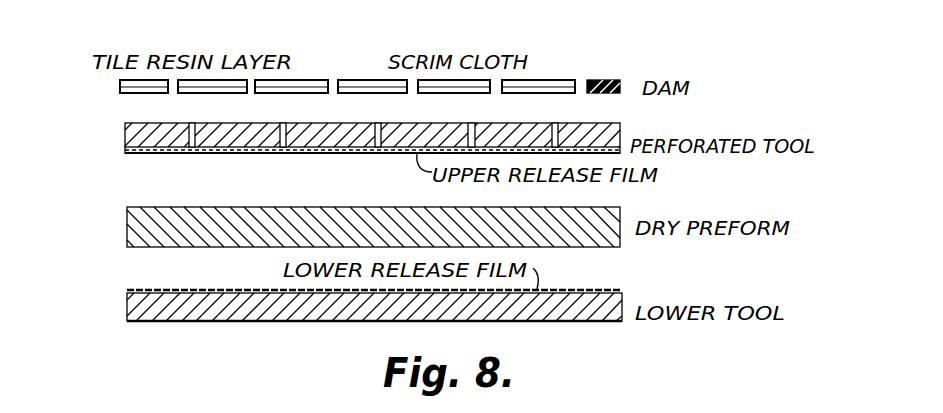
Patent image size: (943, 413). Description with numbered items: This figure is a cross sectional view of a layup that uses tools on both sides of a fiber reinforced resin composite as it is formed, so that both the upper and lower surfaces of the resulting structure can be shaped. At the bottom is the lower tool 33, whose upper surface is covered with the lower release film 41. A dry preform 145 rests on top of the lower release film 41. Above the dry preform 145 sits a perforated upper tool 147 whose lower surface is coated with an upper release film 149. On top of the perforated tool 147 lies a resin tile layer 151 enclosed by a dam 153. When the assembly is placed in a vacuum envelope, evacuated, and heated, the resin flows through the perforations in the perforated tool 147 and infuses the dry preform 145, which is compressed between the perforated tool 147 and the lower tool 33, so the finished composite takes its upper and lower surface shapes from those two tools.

The resin tile layer 151 is at (542, 76).
The dam 153 is at (603, 79).
The perforated upper tool 147 is at (622, 129).
The upper release film 149 is at (322, 151).
The dry preform 145 is at (162, 214).
The lower release film 41 is at (142, 290).
The lower tool 33 is at (198, 320).